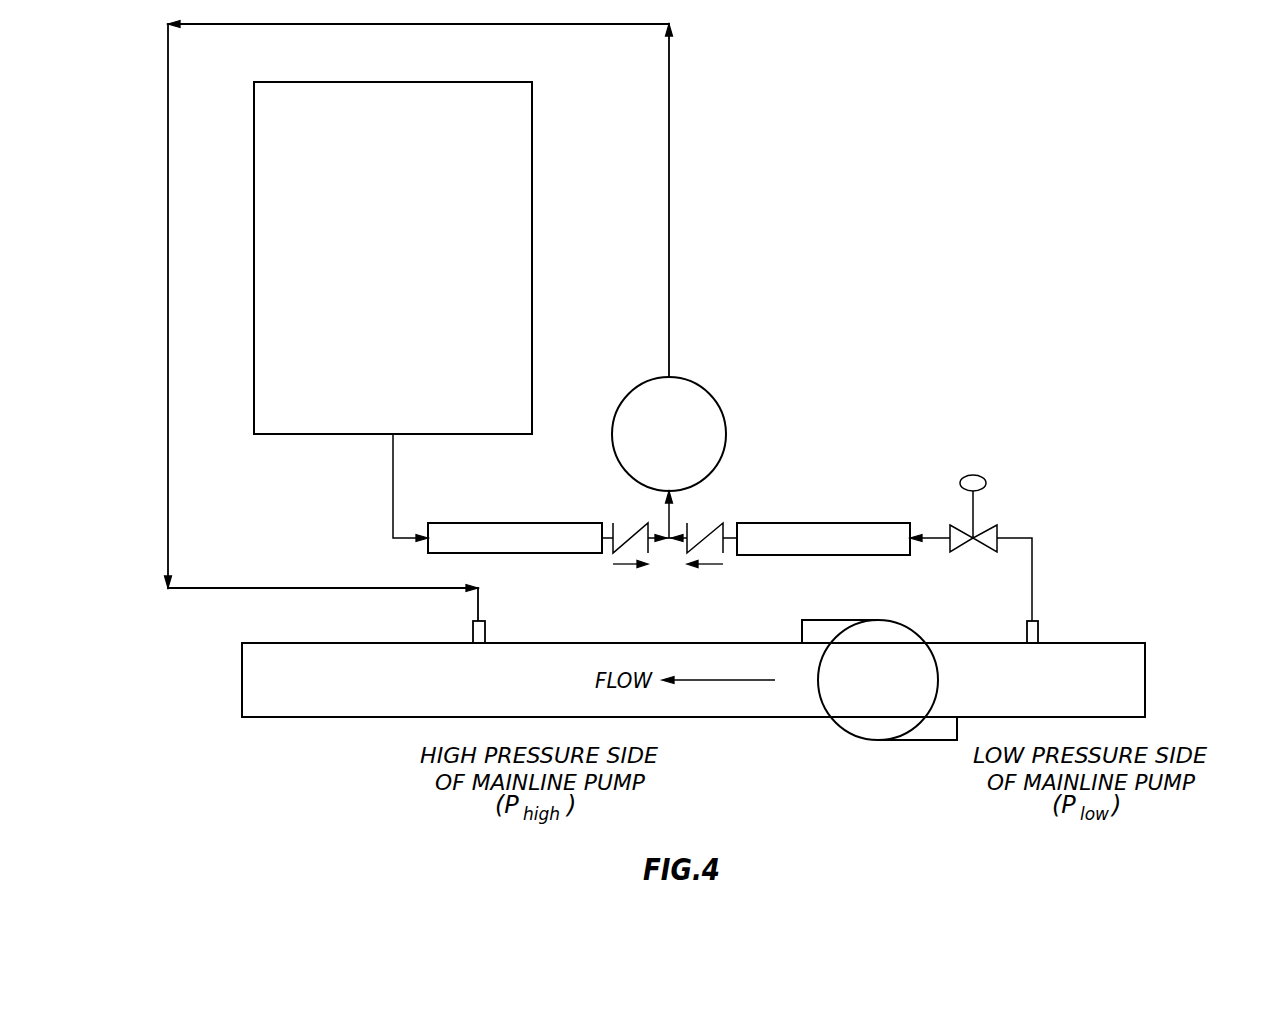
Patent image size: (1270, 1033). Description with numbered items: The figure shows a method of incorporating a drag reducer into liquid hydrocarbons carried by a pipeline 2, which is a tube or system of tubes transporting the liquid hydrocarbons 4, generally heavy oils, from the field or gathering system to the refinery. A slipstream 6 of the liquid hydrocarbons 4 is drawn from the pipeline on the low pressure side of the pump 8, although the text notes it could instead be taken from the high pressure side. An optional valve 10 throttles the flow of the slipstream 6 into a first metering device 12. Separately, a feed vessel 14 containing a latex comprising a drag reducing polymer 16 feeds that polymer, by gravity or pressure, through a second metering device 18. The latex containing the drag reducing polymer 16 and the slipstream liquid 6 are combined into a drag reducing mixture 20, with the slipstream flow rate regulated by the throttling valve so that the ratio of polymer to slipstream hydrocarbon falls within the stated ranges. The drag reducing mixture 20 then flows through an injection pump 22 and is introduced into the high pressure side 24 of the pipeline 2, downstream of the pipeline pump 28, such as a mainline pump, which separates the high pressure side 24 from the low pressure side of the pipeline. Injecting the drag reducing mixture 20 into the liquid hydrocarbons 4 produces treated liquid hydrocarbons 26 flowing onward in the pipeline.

The pipeline 2 is at (1147, 670).
The liquid hydrocarbons 4 is at (1034, 698).
The slipstream 6 is at (1032, 595).
The pump 8 is at (975, 670).
The valve 10 is at (983, 522).
The first metering device 12 is at (800, 551).
The feed vessel 14 is at (383, 288).
The drag reducing polymer 16 is at (393, 452).
The second metering device 18 is at (495, 551).
The drag reducing mixture 20 is at (668, 560).
The injection pump 22 is at (657, 448).
The high pressure side 24 is at (768, 702).
The treated liquid hydrocarbons 26 is at (313, 698).
The pipeline pump 28 is at (868, 687).